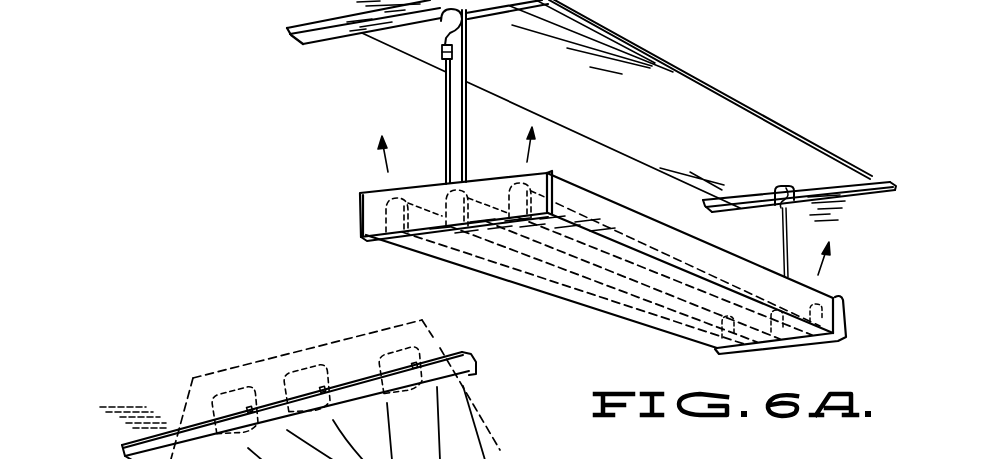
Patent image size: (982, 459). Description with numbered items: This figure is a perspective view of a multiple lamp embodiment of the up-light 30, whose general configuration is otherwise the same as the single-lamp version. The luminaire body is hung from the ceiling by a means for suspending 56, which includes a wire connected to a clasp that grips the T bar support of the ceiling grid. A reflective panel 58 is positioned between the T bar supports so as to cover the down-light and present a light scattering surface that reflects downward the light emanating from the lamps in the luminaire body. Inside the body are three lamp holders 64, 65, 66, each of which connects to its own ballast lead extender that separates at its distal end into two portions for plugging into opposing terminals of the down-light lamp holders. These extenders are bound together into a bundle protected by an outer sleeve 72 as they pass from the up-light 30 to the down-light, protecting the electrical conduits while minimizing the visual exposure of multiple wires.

The up-light 30 is at (336, 215).
The means for suspending 56 is at (446, 104).
The reflective panel 58 is at (664, 80).
The lamp holder 64 is at (513, 237).
The lamp holder 65 is at (440, 236).
The lamp holder 66 is at (366, 239).
The outer sleeve 72 is at (466, 72).